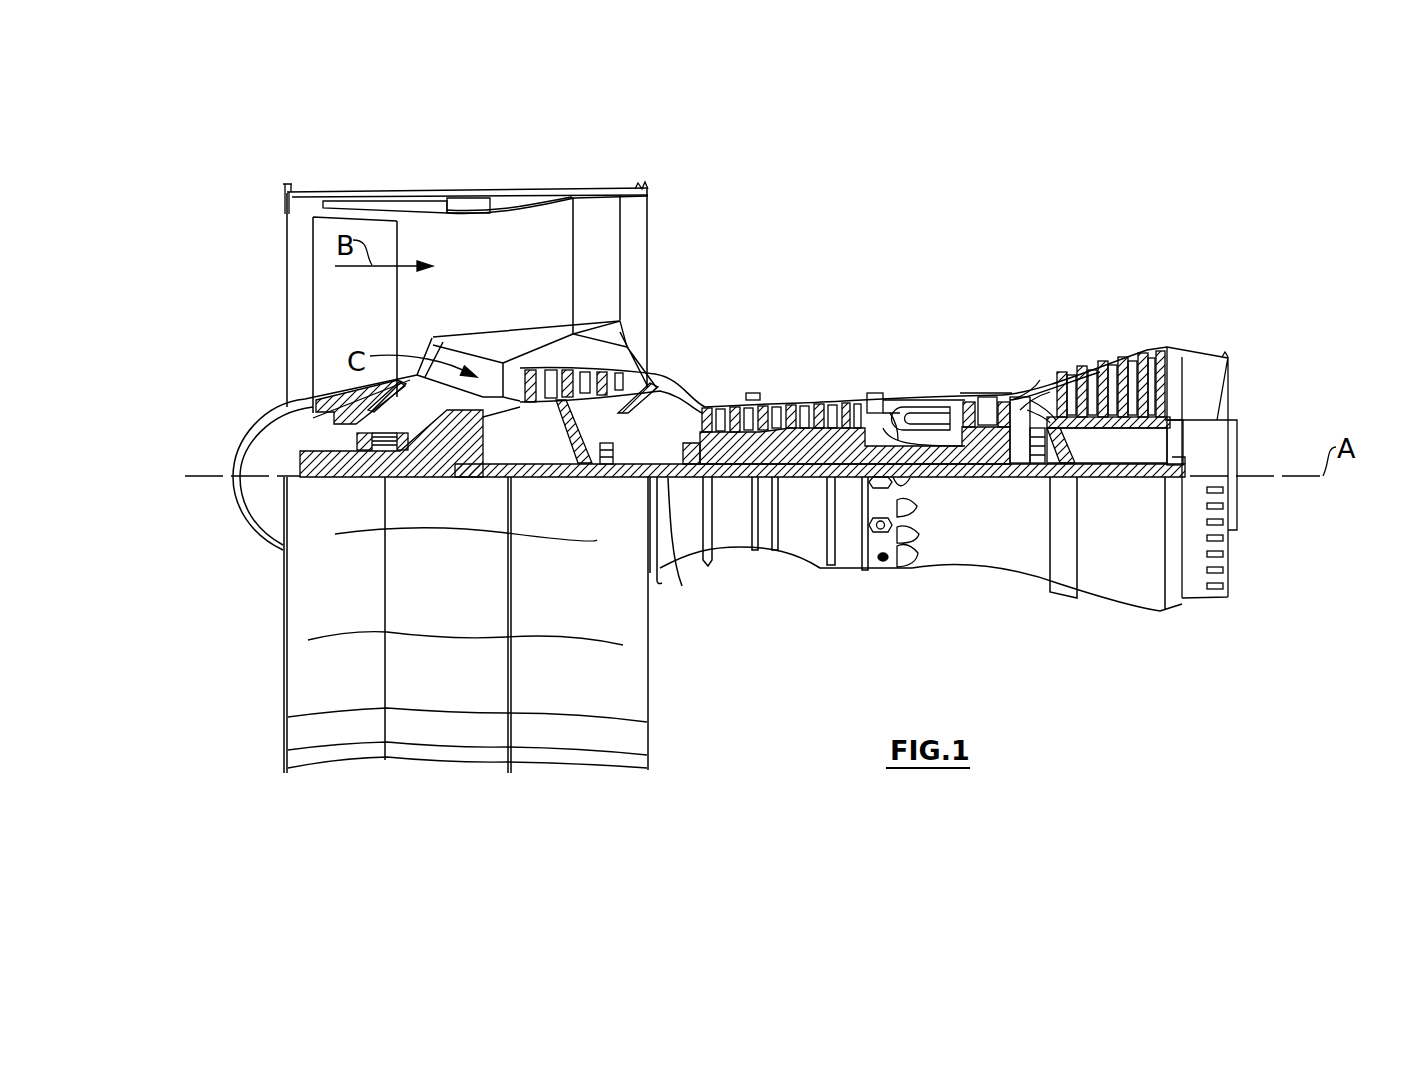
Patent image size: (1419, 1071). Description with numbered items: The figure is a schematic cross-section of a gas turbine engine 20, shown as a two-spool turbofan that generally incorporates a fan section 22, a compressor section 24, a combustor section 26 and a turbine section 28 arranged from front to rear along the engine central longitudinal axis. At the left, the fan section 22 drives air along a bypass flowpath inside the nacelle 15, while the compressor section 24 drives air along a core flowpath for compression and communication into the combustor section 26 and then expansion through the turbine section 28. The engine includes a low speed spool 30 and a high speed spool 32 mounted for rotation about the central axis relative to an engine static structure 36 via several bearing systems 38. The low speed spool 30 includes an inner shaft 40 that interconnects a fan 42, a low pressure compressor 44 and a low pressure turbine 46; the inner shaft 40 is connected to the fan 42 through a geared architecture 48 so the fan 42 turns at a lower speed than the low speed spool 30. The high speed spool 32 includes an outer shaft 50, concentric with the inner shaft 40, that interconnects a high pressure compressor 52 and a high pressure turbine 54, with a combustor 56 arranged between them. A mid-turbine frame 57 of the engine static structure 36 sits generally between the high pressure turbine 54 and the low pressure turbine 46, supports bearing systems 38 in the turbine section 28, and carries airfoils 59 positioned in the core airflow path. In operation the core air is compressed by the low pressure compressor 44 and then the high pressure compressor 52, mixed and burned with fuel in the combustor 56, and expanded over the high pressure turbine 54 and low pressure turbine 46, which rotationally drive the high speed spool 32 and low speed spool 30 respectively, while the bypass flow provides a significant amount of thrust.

The nacelle 15 is at (468, 196).
The gas turbine engine 20 is at (930, 243).
The fan section 22 is at (396, 180).
The compressor section 24 is at (701, 379).
The combustor section 26 is at (920, 369).
The turbine section 28 is at (1069, 335).
The low speed spool 30 is at (807, 491).
The high speed spool 32 is at (852, 440).
The engine static structure 36 is at (847, 574).
The bearing systems 38 is at (605, 461).
The inner shaft 40 is at (682, 568).
The fan 42 is at (372, 322).
The low pressure compressor 44 is at (566, 378).
The low pressure turbine 46 is at (1115, 370).
The geared architecture 48 is at (470, 460).
The outer shaft 50 is at (929, 461).
The high pressure compressor 52 is at (783, 456).
The high pressure turbine 54 is at (985, 394).
The combustor 56 is at (920, 418).
The mid-turbine frame 57 is at (1032, 386).
The airfoils 59 is at (1055, 440).